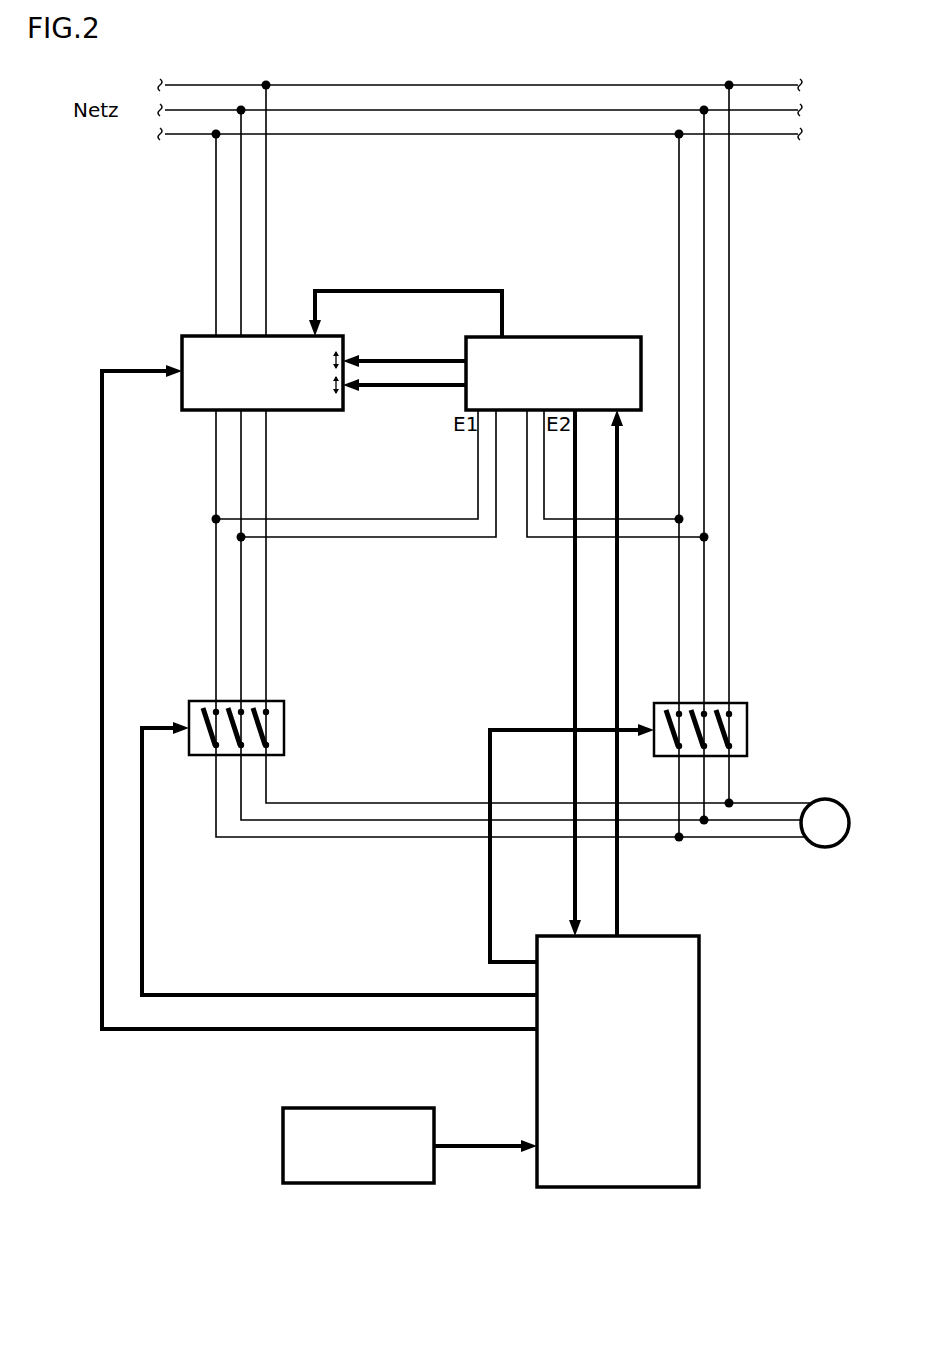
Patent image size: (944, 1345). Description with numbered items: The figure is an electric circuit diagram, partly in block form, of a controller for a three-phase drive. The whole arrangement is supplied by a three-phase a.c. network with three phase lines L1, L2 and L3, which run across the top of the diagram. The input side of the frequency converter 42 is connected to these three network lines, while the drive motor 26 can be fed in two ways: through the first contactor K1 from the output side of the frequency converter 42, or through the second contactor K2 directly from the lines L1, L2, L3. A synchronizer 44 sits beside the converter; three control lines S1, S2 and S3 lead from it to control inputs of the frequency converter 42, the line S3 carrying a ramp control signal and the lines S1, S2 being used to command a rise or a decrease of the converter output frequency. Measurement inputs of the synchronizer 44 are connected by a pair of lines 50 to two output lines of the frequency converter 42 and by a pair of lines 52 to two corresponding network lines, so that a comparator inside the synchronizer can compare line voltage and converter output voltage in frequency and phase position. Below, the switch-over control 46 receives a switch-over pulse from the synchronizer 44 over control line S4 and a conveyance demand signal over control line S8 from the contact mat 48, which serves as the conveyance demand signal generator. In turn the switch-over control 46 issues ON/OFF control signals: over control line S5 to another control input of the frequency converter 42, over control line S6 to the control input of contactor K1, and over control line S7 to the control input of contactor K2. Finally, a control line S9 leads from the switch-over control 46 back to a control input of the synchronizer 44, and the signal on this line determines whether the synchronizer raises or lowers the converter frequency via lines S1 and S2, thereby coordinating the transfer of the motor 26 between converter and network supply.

The drive motor 26 is at (827, 798).
The frequency converter 42 is at (190, 335).
The synchronizer 44 is at (603, 337).
The switch-over control 46 is at (680, 934).
The contact mat 48 is at (302, 1108).
The pair of lines 50 is at (386, 535).
The pair of lines 52 is at (627, 535).
The first contactor K1 is at (284, 701).
The second contactor K2 is at (747, 703).
The control line S1 is at (393, 388).
The control line S2 is at (397, 362).
The control line S3 is at (393, 292).
The control line S4 is at (572, 638).
The control line S5 is at (355, 1029).
The control line S6 is at (408, 995).
The control line S7 is at (490, 905).
The control line S8 is at (470, 1146).
The control line S9 is at (620, 638).
The phase line L1 is at (467, 86).
The phase line L2 is at (467, 111).
The phase line L3 is at (467, 135).